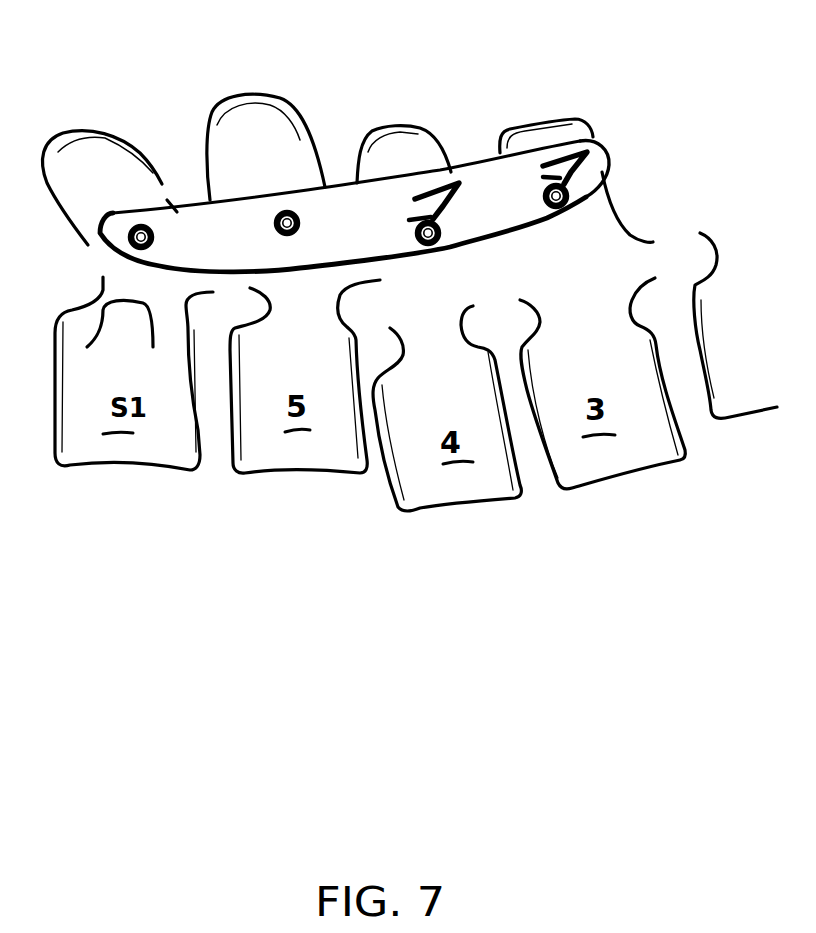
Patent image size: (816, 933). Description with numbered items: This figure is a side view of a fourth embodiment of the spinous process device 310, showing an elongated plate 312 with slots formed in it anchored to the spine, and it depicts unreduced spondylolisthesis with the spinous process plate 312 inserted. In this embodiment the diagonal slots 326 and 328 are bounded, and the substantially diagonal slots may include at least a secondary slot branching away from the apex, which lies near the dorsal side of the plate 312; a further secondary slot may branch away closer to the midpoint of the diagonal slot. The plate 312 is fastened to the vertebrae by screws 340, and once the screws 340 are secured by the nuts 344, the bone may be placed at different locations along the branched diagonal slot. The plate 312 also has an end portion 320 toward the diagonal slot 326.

The spinous process device 310 is at (339, 178).
The plate 312 is at (210, 228).
The plate end portion 320 is at (591, 176).
The diagonal slot 326 is at (598, 156).
The diagonal slot 328 is at (432, 230).
The screw 340 is at (297, 217).
The nut 344 is at (278, 234).